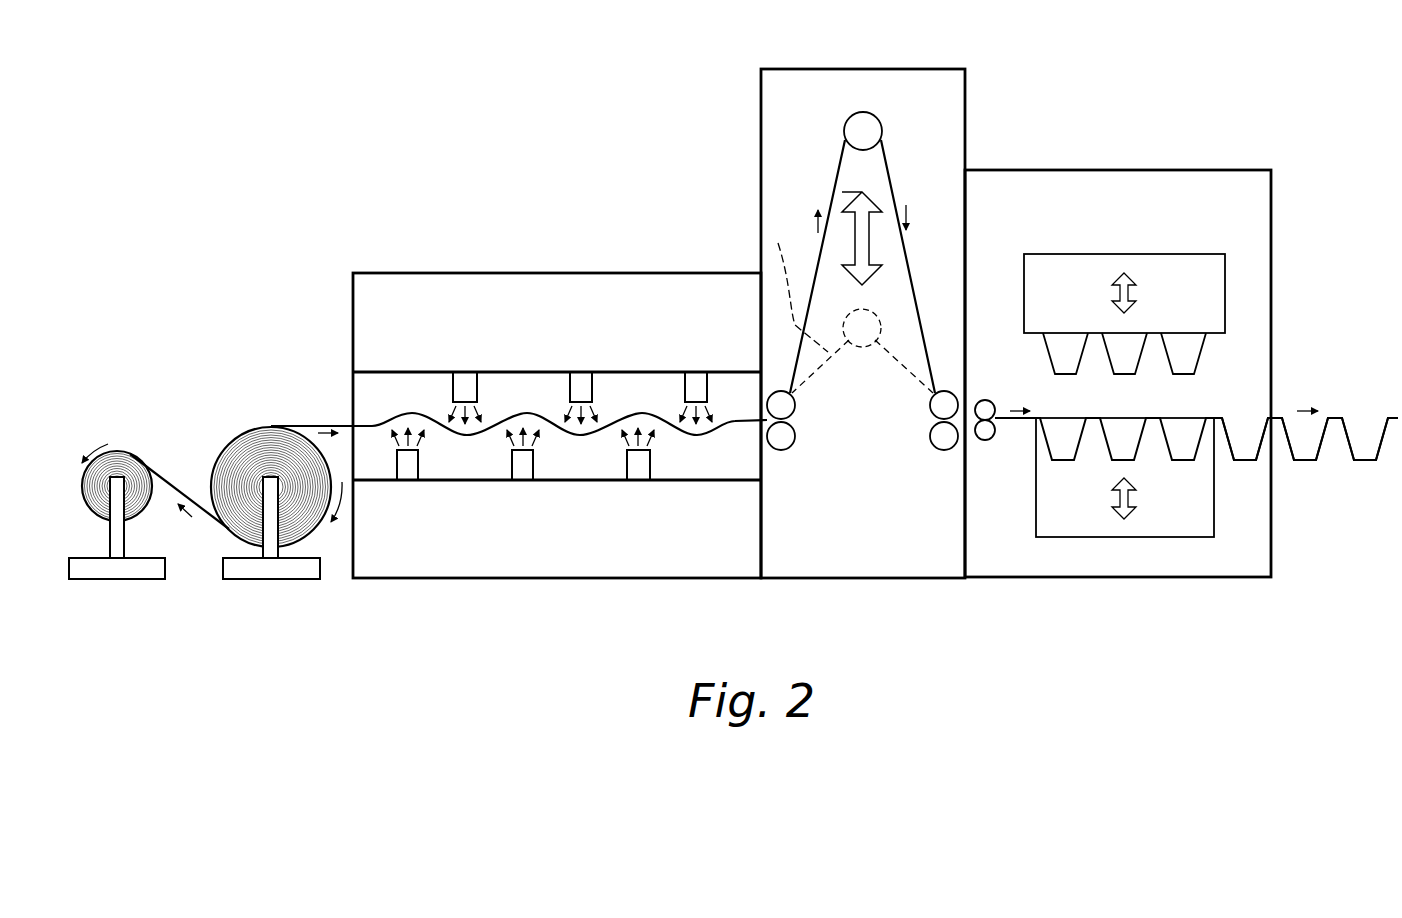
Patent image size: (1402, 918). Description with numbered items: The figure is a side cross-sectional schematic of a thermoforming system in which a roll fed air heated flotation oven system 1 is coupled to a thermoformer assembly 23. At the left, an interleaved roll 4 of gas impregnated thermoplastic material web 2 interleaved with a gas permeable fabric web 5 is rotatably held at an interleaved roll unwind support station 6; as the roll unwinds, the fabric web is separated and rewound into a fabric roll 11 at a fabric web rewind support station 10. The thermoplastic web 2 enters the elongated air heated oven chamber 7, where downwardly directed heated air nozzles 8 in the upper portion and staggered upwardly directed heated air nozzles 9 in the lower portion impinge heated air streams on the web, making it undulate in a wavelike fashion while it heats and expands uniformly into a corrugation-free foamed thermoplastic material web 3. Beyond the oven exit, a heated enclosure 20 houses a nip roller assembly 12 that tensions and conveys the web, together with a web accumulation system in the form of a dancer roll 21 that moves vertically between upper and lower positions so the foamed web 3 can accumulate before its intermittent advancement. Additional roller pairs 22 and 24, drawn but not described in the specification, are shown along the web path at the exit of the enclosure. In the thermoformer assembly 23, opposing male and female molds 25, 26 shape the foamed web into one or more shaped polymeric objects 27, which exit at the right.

The roll fed air heated flotation oven system 1 is at (398, 272).
The gas impregnated thermoplastic material web 2 is at (327, 423).
The corrugation-free foamed thermoplastic material web 3 is at (762, 430).
The interleaved roll 4 is at (250, 428).
The gas permeable fabric web 5 is at (178, 478).
The interleaved roll unwind support station 6 is at (268, 488).
The elongated air heated oven chamber 7 is at (377, 385).
The downwardly directed heated air nozzles 8 is at (695, 380).
The upwardly directed heated air nozzles 9 is at (410, 470).
The fabric web rewind support station 10 is at (116, 488).
The fabric roll 11 is at (128, 445).
The nip roller assembly 12 is at (781, 450).
The heated enclosure 20 is at (800, 69).
The dancer roll 21 is at (880, 122).
The outlet roller pair 22 is at (944, 450).
The thermoformer assembly 23 is at (1097, 170).
The feed roller pair 24 is at (985, 440).
The male mold 25 is at (1143, 254).
The female mold 26 is at (1155, 537).
The shaped polymeric objects 27 is at (1303, 460).